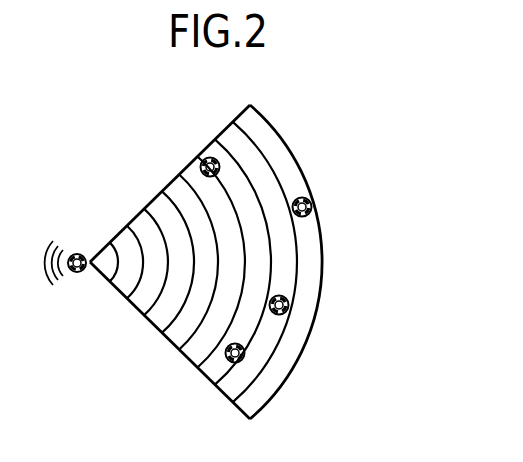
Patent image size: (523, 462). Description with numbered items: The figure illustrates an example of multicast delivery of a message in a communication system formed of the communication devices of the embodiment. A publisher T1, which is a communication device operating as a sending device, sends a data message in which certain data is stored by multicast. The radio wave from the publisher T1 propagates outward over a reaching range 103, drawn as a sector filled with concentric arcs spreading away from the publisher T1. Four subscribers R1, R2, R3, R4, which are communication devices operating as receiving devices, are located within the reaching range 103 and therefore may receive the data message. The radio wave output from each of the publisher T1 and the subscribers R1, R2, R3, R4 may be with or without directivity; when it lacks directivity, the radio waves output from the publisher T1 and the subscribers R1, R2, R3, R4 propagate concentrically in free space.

The reaching range 103 is at (324, 262).
The publisher T1 is at (79, 253).
The subscriber R1 is at (204, 158).
The subscriber R2 is at (226, 359).
The subscriber R3 is at (281, 315).
The subscriber R4 is at (305, 197).